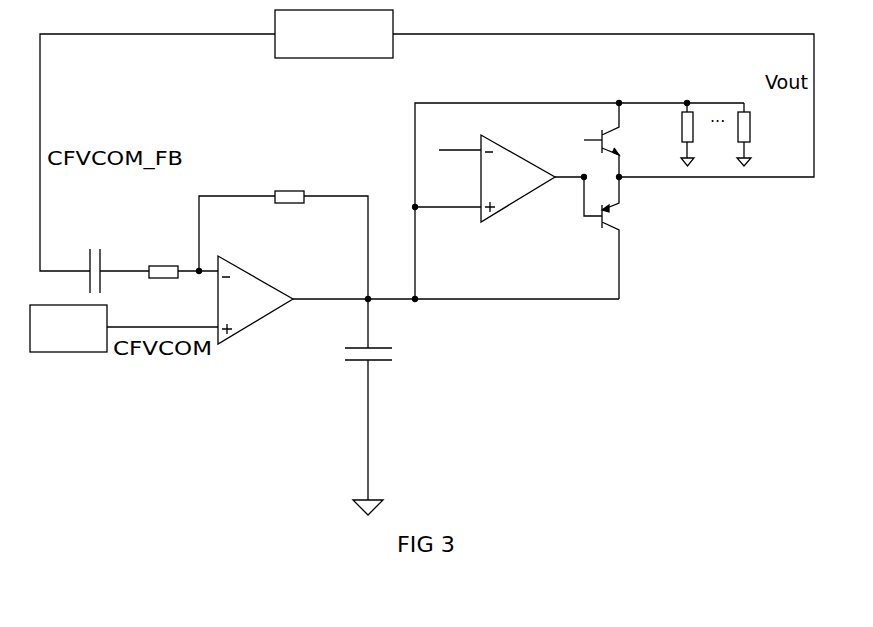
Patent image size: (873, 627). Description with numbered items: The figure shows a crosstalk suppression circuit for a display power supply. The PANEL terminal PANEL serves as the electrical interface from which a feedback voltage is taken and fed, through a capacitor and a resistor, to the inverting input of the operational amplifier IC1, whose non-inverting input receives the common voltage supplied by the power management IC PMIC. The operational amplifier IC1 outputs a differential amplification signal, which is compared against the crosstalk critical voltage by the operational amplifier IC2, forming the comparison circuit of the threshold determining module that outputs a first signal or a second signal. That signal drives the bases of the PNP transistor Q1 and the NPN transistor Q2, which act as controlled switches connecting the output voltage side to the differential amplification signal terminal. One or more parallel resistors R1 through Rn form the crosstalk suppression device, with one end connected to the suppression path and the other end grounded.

The PANEL terminal PANEL is at (334, 34).
The power management IC PMIC is at (68, 328).
The operational amplifier IC1 is at (255, 300).
The operational amplifier IC2 is at (497, 175).
The PNP transistor Q1 is at (625, 238).
The NPN transistor Q2 is at (625, 140).
The resistor R1 is at (675, 134).
The resistor Rn is at (757, 134).